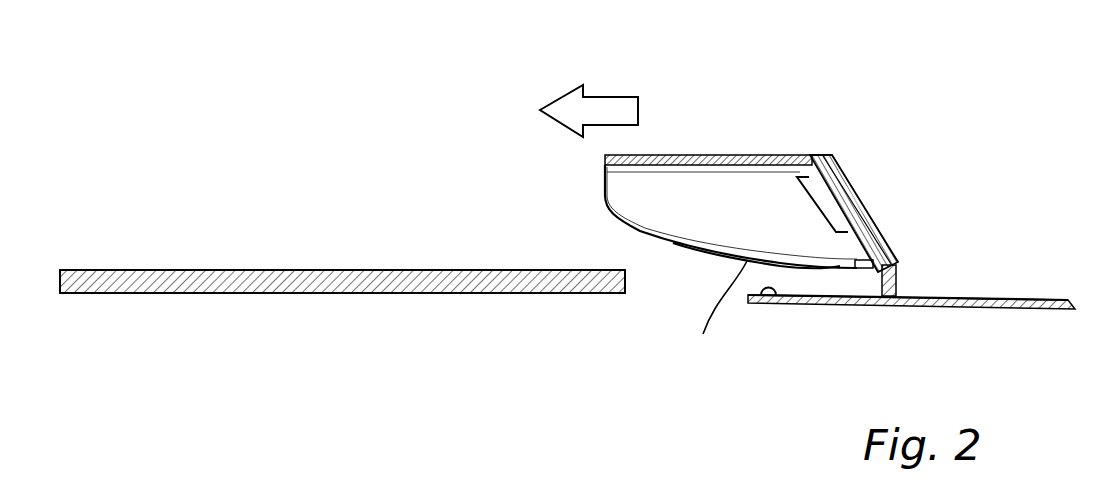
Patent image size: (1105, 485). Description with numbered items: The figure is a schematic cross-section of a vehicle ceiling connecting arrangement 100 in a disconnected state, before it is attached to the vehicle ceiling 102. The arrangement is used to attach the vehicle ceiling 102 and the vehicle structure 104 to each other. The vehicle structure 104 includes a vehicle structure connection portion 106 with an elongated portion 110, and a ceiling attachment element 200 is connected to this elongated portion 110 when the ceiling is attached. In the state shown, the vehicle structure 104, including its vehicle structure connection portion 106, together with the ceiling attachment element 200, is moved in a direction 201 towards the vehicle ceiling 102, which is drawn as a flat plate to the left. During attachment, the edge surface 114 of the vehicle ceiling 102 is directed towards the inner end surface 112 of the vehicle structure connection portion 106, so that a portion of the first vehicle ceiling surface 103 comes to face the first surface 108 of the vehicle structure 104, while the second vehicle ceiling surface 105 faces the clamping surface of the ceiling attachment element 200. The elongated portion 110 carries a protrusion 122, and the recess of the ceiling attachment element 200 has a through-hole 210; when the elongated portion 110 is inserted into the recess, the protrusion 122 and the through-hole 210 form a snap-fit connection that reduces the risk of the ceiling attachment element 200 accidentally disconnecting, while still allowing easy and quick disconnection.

The vehicle ceiling connecting arrangement 100 is at (880, 163).
The vehicle ceiling 102 is at (138, 293).
The first vehicle ceiling surface 103 is at (593, 294).
The vehicle structure 104 is at (1050, 307).
The second vehicle ceiling surface 105 is at (582, 270).
The vehicle structure connection portion 106 is at (932, 271).
The first surface 108 is at (768, 297).
The elongated portion 110 is at (813, 157).
The inner end surface 112 is at (880, 292).
The edge surface 114 is at (627, 288).
The protrusion 122 is at (878, 238).
The ceiling attachment element 200 is at (757, 128).
The direction 201 is at (617, 97).
The through-hole 210 is at (873, 230).